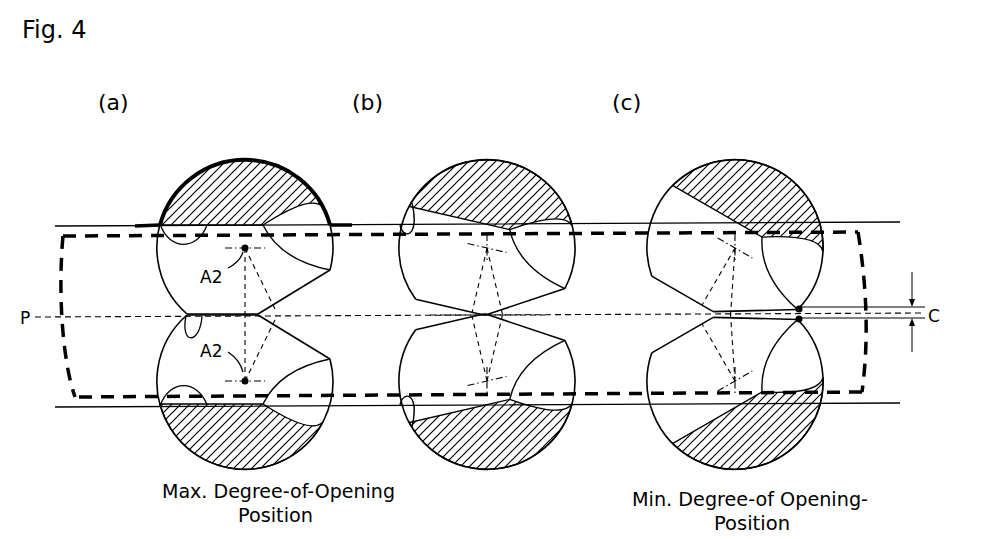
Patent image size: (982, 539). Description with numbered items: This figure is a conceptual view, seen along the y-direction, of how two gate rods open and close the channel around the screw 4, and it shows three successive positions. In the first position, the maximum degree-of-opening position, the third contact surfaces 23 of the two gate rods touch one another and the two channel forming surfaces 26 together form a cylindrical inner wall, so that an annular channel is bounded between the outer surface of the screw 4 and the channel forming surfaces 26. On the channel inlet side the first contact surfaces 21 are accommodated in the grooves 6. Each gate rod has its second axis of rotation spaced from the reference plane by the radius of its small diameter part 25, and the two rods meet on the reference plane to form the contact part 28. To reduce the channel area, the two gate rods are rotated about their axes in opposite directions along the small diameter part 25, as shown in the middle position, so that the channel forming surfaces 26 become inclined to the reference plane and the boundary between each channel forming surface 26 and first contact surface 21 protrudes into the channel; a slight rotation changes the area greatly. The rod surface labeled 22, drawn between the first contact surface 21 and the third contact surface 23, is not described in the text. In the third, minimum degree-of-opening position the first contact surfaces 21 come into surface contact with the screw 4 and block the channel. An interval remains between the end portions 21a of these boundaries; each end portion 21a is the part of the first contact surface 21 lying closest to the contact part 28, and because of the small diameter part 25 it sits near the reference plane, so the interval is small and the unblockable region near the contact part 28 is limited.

The screw 4 is at (626, 228).
The groove 6 is at (243, 165).
The first contact surface 21 is at (325, 222).
The end portion 21a is at (803, 307).
The flank surface of rotor 22 is at (298, 295).
The third contact surface 23 is at (176, 334).
The small diameter part 25 is at (440, 316).
The channel forming surface 26 is at (163, 222).
The contact part 28 is at (95, 317).